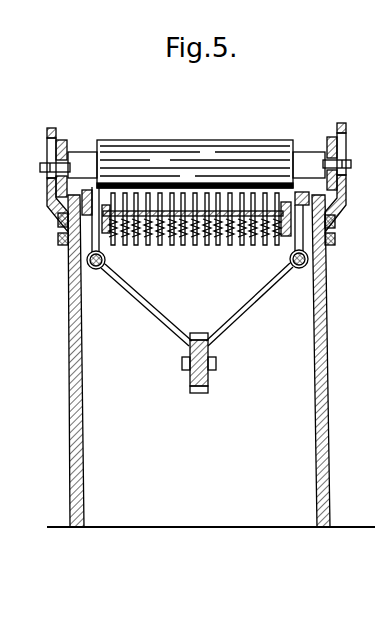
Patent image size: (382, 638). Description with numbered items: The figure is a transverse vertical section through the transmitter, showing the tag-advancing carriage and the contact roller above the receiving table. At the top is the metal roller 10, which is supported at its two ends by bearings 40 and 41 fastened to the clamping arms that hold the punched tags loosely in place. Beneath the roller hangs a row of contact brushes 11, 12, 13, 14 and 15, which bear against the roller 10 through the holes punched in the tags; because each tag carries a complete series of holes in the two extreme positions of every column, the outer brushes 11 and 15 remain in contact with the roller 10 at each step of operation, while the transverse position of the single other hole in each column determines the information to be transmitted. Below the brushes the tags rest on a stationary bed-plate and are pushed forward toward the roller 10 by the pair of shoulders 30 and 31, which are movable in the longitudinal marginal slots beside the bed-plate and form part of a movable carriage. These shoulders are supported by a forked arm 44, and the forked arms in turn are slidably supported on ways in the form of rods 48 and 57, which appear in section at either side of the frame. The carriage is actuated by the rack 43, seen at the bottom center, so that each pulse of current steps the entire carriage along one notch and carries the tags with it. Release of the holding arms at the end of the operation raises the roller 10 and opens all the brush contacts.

The metal roller 10 is at (229, 149).
The brush 11 is at (281, 238).
The brush 12 is at (263, 244).
The brush 13 is at (152, 246).
The brush 14 is at (116, 245).
The brush 15 is at (108, 248).
The shoulder 30 is at (301, 192).
The shoulder 31 is at (87, 190).
The bearing 40 is at (345, 165).
The bearing 41 is at (42, 168).
The rack 43 is at (210, 379).
The forked arm 44 is at (243, 312).
The rod 48 is at (298, 269).
The rod 57 is at (99, 270).